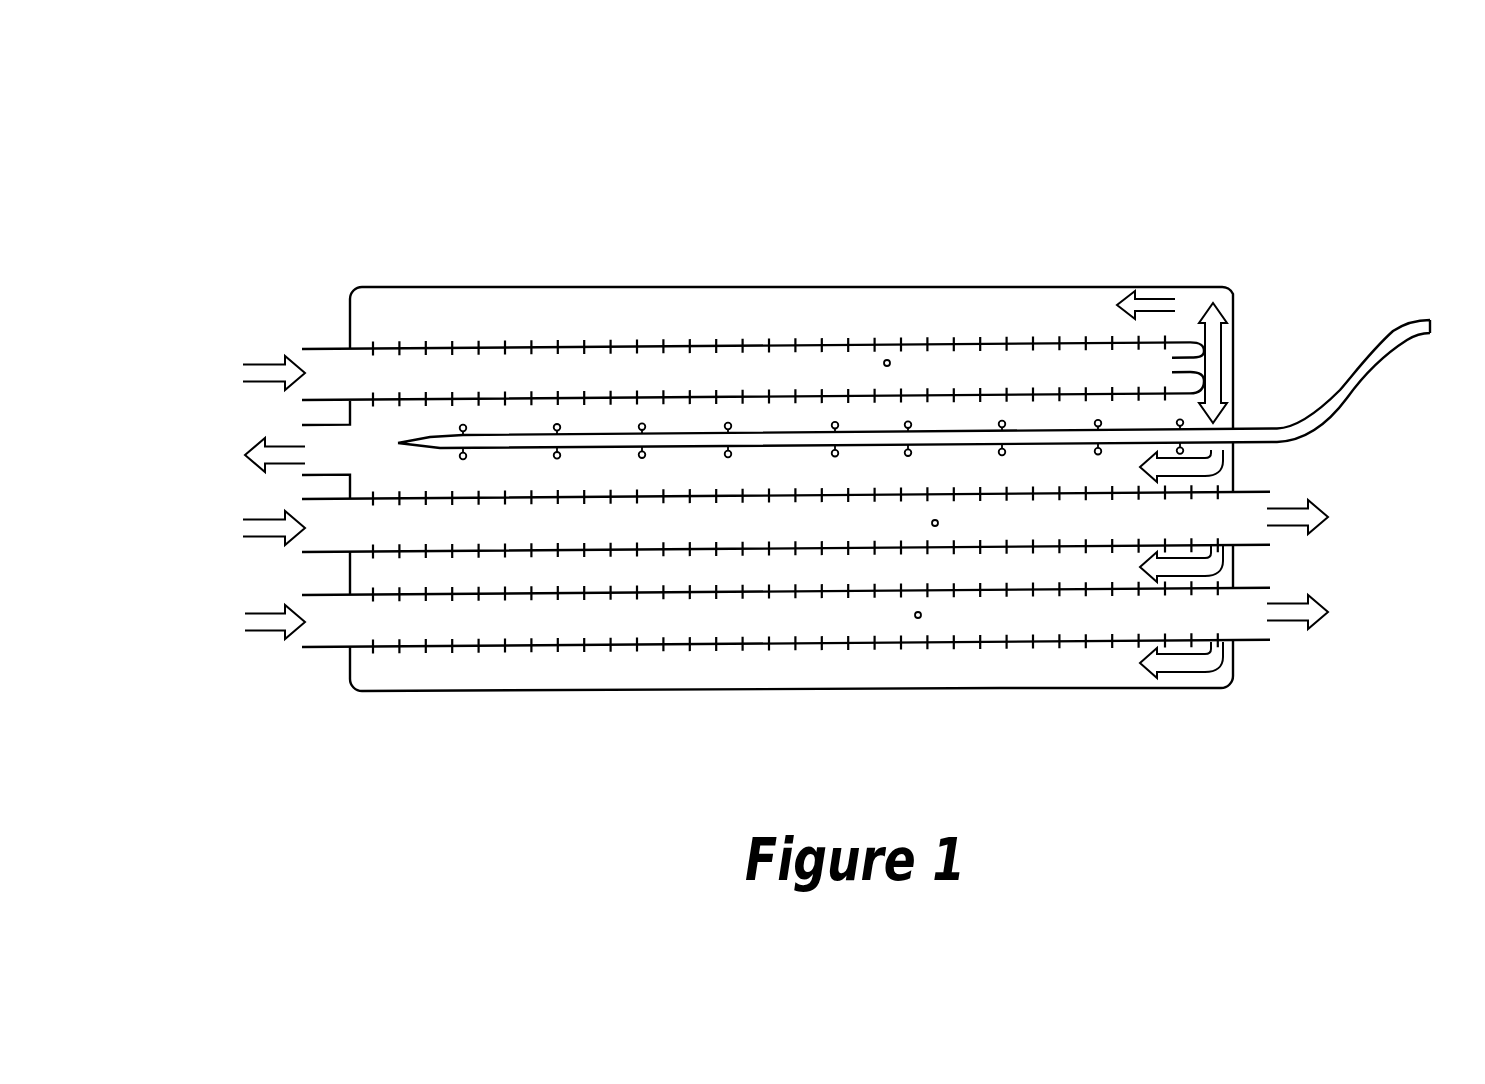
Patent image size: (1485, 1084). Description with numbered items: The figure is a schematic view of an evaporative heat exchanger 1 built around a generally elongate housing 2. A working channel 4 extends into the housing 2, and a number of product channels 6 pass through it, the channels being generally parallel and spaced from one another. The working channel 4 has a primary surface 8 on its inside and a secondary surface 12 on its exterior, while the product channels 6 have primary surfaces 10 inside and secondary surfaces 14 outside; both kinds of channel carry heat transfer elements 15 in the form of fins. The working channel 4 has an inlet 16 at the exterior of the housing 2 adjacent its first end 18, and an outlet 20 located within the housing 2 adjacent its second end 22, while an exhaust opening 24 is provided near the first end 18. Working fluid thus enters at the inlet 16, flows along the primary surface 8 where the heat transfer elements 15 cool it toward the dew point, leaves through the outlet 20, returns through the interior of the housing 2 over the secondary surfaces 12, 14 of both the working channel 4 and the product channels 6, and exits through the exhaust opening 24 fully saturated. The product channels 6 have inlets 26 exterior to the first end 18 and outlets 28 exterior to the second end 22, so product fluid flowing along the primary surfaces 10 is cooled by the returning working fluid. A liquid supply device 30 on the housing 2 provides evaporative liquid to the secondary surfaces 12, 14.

The evaporative heat exchanger 1 is at (802, 445).
The housing 2 is at (1160, 283).
The working channel 4 is at (884, 360).
The product channels 6 is at (918, 617).
The primary surface 8 is at (697, 344).
The primary surfaces 10 is at (730, 643).
The secondary surface 12 is at (763, 345).
The secondary surfaces 14 is at (662, 645).
The heat transfer elements 15 is at (558, 650).
The inlet 16 is at (322, 348).
The first end 18 is at (400, 692).
The outlet 20 is at (1178, 340).
The second end 22 is at (1205, 688).
The exhaust opening 24 is at (323, 475).
The inlets 26 is at (330, 595).
The outlets 28 is at (1250, 546).
The liquid supply device 30 is at (1373, 366).